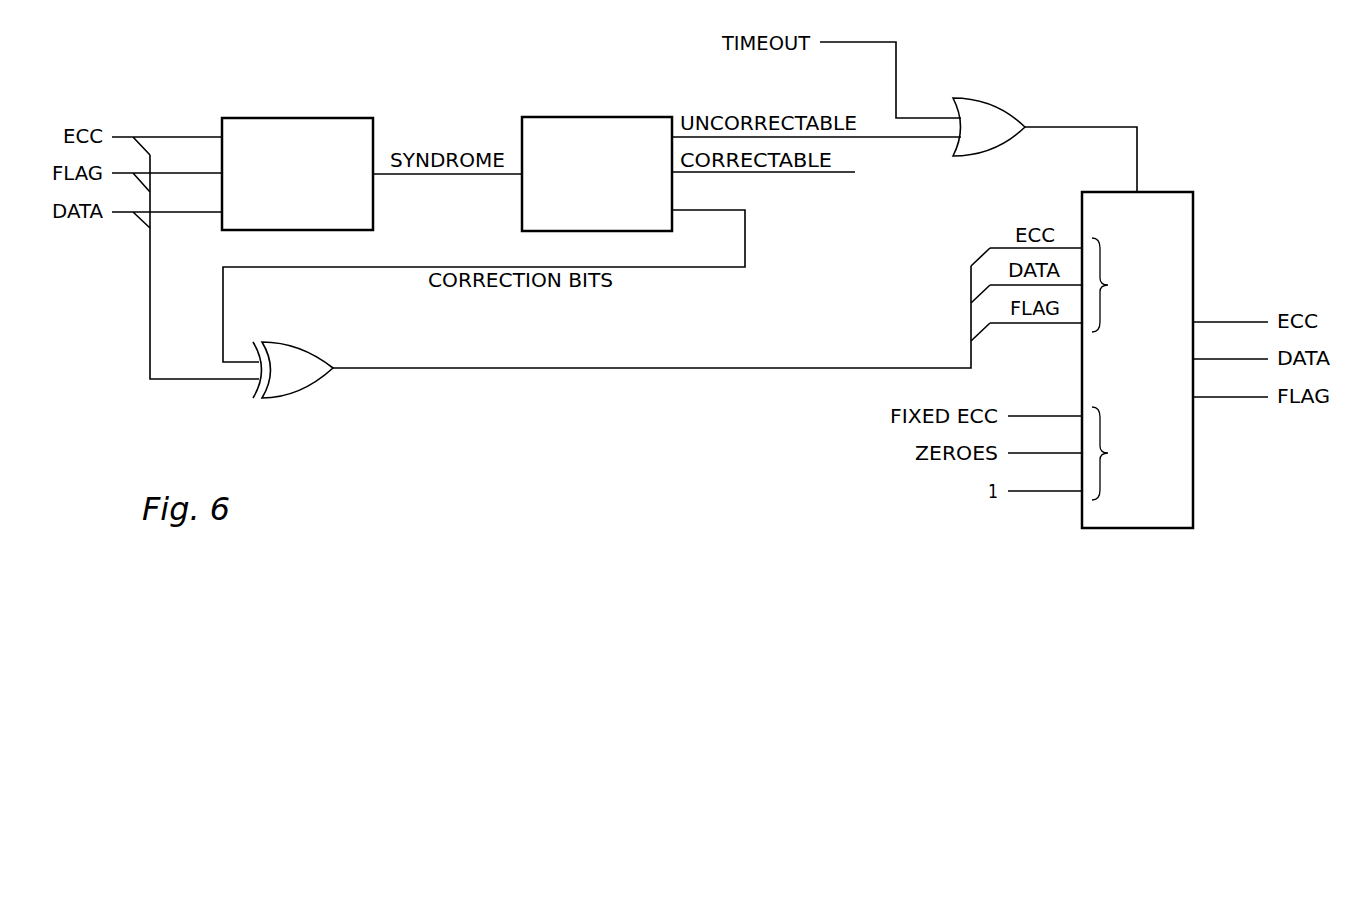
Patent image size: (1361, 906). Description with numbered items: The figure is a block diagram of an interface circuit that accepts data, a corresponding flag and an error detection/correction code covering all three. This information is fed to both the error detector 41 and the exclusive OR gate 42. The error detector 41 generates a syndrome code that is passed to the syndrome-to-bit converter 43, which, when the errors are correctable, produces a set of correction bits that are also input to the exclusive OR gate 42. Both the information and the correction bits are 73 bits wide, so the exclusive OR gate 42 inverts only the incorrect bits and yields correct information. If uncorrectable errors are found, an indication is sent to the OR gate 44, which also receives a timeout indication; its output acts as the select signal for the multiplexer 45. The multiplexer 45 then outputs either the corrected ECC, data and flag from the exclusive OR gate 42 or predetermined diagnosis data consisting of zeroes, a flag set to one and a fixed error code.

The error detector 41 is at (308, 208).
The exclusive OR gate 42 is at (293, 394).
The syndrome-to-bit converter 43 is at (607, 220).
The OR gate 44 is at (1003, 104).
The multiplexer 45 is at (1155, 192).
The bit width of information and correction bits 73 is at (178, 370).